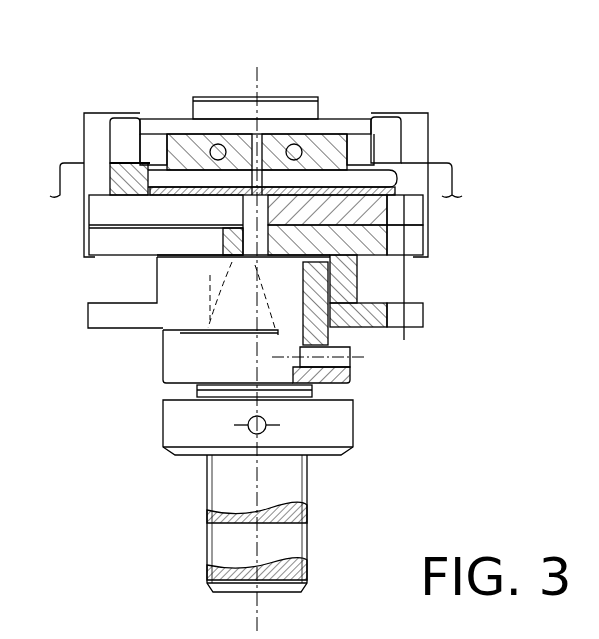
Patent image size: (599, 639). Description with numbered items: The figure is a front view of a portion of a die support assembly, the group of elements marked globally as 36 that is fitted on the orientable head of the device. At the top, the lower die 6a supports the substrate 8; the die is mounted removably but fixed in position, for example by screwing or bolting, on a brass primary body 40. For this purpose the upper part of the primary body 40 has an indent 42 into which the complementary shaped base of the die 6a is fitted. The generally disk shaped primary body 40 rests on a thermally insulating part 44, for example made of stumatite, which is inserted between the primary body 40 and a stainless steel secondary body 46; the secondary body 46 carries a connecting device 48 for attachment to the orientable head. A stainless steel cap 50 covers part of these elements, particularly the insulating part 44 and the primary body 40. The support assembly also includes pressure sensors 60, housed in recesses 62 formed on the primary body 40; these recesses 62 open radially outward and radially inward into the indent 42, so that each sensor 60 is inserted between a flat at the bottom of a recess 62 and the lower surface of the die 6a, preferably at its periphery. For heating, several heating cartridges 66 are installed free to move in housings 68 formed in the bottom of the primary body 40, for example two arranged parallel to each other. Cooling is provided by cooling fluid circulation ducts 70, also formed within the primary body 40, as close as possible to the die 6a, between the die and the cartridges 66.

The die support assembly elements 36 is at (449, 49).
The substrate 8 is at (238, 97).
The lower die 6a is at (340, 124).
The indent 42 is at (152, 125).
The pressure sensors 60 is at (157, 145).
The cooling fluid circulation ducts 70 is at (222, 146).
The recesses 62 is at (120, 140).
The cap 50 is at (428, 140).
The primary body 40 is at (110, 180).
The housings 68 is at (160, 185).
The heating cartridges 66 is at (165, 226).
The thermally insulating part 44 is at (200, 192).
The secondary body 46 is at (395, 313).
The connecting device 48 is at (352, 378).